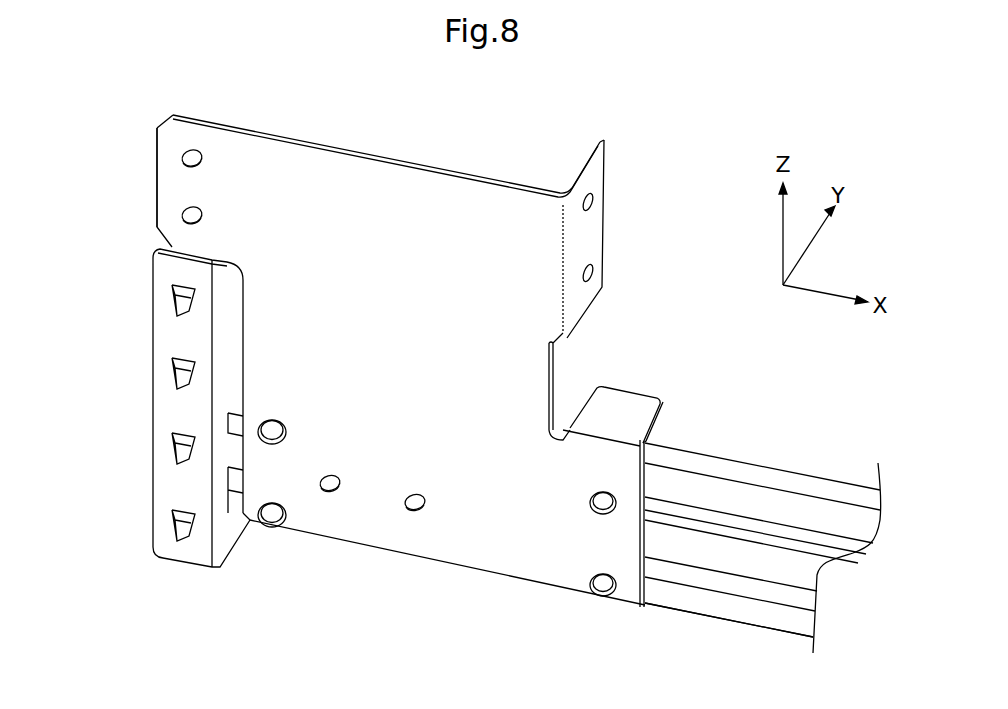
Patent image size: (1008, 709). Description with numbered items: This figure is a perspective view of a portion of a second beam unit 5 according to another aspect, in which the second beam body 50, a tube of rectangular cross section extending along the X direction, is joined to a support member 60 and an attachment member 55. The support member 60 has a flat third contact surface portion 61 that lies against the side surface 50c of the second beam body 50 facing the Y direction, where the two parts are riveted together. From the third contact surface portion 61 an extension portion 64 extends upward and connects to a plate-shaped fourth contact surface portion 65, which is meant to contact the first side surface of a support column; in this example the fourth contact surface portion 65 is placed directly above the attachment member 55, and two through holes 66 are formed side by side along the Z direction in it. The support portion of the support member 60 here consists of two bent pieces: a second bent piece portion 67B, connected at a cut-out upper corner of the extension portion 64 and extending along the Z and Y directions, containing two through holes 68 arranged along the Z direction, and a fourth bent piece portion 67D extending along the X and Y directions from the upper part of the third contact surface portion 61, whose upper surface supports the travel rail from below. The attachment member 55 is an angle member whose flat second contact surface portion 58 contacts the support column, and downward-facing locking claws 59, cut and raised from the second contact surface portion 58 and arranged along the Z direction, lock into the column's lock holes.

The second beam unit 5 is at (92, 152).
The second beam body 50 is at (763, 530).
The side surface 50c is at (720, 608).
The attachment member 55 is at (149, 408).
The second contact surface portion 58 is at (165, 415).
The locking claws 59 is at (183, 373).
The support member 60 is at (405, 156).
The third contact surface portion 61 is at (380, 523).
The extension portion 64 is at (420, 383).
The fourth contact surface portion 65 is at (165, 195).
The through hole 66 is at (193, 215).
The second bent piece portion 67B is at (593, 242).
The fourth bent piece portion 67D is at (627, 407).
The through holes 68 is at (591, 200).